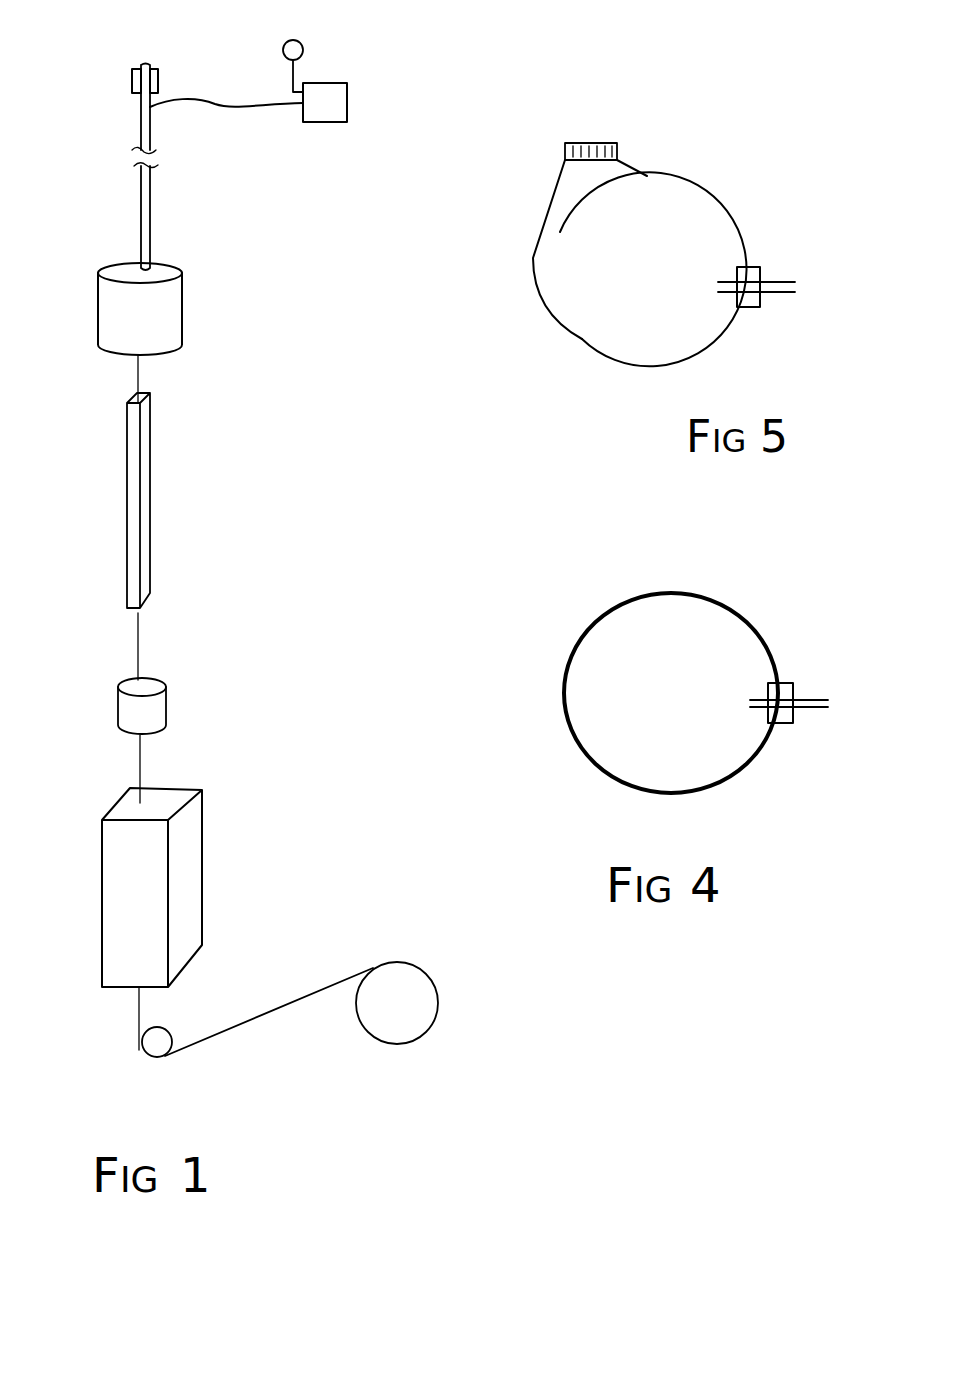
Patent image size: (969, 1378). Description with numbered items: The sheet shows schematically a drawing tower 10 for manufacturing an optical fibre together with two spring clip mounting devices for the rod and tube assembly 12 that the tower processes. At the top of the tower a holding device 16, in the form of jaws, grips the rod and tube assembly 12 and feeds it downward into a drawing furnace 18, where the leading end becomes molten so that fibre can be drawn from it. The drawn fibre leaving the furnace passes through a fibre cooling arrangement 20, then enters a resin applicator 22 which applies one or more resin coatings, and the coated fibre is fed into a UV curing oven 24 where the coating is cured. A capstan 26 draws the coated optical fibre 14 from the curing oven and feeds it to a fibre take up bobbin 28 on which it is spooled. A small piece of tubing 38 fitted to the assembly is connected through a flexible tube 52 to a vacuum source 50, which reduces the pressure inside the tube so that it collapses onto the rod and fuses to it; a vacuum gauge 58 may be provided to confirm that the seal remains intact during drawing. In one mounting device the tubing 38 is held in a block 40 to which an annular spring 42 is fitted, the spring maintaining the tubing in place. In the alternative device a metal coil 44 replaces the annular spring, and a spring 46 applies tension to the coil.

In FIG. 1, the drawing tower 10 is at (232, 245).
In FIG. 1, the rod and tube assembly 12 is at (135, 136).
In FIG. 1, the optical fibre 14 is at (283, 1013).
In FIG. 1, the holding device 16 is at (160, 78).
In FIG. 1, the drawing furnace 18 is at (183, 300).
In FIG. 1, the fibre cooling arrangement 20 is at (150, 480).
In FIG. 1, the resin applicator 22 is at (168, 710).
In FIG. 1, the UV curing oven 24 is at (202, 878).
In FIG. 1, the capstan 26 is at (140, 1052).
In FIG. 1, the fibre take up bobbin 28 is at (420, 1038).
In FIG. 5, the tubing 38 is at (780, 283).
In FIG. 4, the tubing 38 is at (810, 693).
In FIG. 5, the block 40 is at (760, 312).
In FIG. 4, the block 40 is at (785, 727).
In FIG. 4, the annular spring 42 is at (713, 598).
In FIG. 5, the metal coil 44 is at (683, 177).
In FIG. 5, the spring 46 is at (600, 143).
In FIG. 1, the vacuum source 50 is at (347, 103).
In FIG. 1, the flexible tube 52 is at (236, 108).
In FIG. 1, the vacuum gauge 58 is at (283, 48).